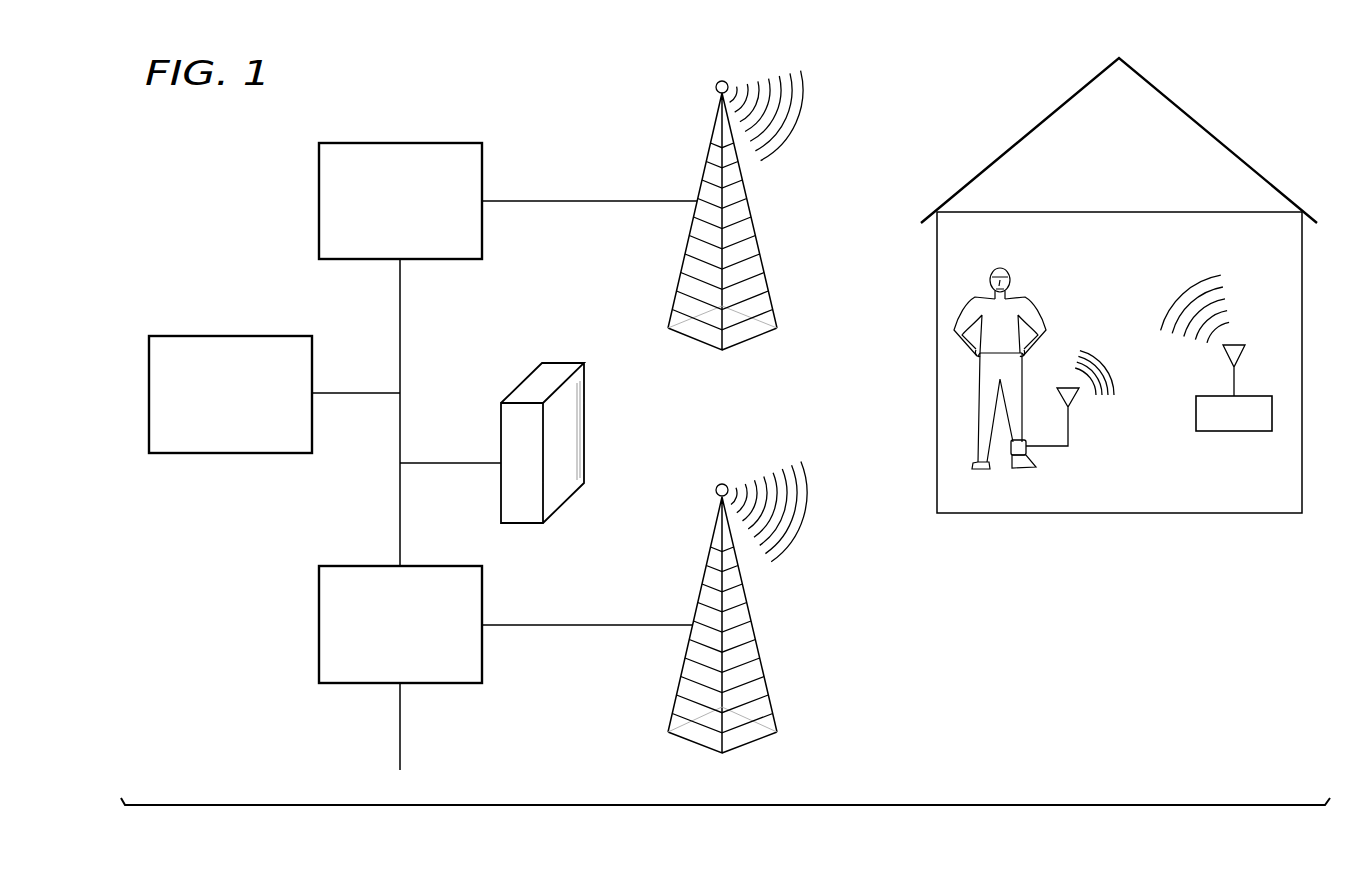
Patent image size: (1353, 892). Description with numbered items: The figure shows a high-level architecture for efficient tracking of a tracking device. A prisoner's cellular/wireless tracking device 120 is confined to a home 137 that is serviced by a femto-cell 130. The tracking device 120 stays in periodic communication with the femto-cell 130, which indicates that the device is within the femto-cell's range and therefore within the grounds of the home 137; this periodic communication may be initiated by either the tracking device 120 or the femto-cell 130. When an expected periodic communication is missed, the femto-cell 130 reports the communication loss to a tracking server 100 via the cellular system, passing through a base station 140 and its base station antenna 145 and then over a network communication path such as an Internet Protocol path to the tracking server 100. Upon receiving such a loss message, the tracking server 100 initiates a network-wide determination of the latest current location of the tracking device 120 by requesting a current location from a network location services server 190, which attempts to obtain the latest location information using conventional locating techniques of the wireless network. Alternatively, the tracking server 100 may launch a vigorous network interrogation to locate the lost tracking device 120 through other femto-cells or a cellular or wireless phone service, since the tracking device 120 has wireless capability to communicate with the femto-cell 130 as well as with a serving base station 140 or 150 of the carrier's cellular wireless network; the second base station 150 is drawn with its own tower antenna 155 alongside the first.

The tracking server 100 is at (587, 435).
The cellular/wireless tracking device 120 is at (1027, 452).
The femto-cell 130 is at (1248, 433).
The home 137 is at (935, 457).
The base station 140 is at (455, 261).
The base station antenna 145 is at (748, 342).
The base station 150 is at (447, 685).
The cell tower antenna 155 is at (765, 660).
The network location services server 190 is at (238, 454).